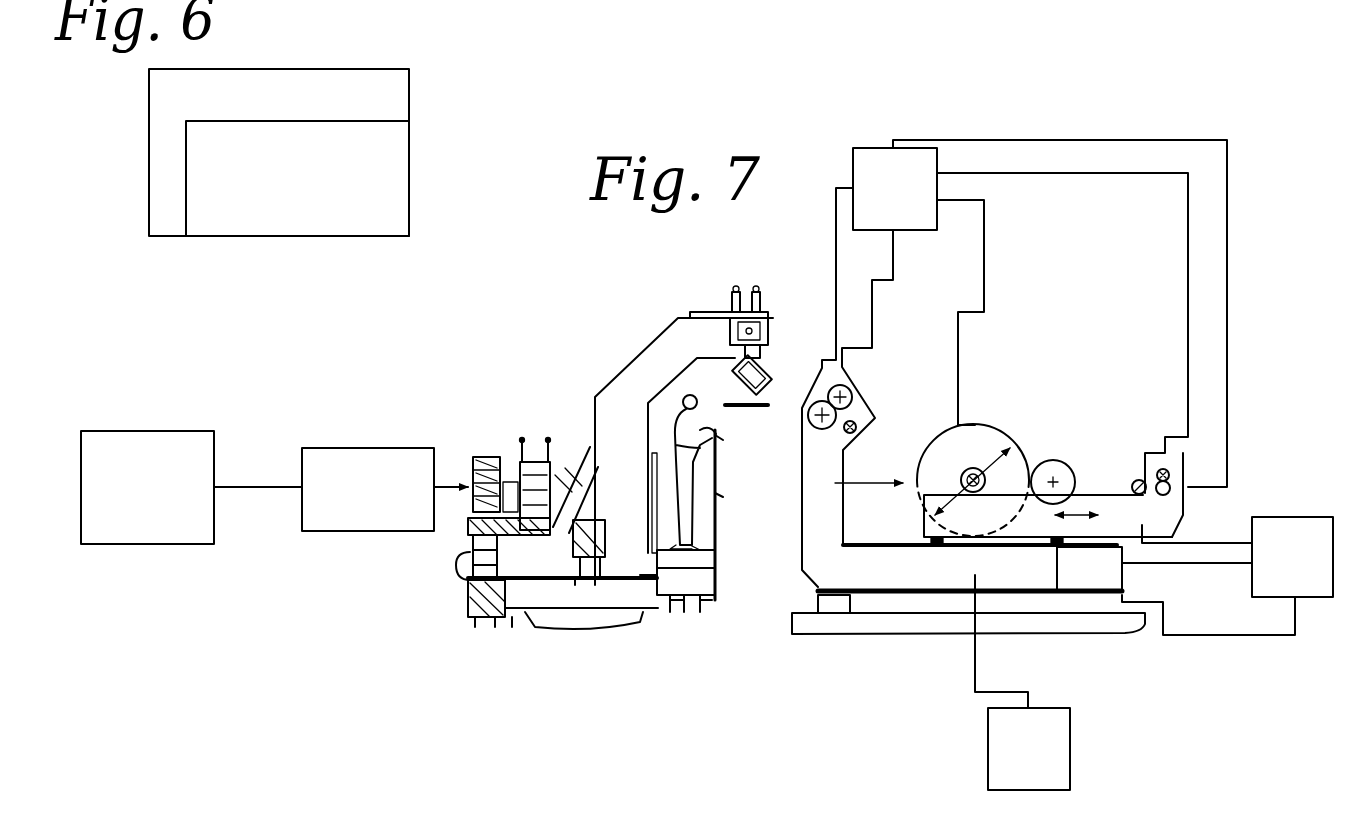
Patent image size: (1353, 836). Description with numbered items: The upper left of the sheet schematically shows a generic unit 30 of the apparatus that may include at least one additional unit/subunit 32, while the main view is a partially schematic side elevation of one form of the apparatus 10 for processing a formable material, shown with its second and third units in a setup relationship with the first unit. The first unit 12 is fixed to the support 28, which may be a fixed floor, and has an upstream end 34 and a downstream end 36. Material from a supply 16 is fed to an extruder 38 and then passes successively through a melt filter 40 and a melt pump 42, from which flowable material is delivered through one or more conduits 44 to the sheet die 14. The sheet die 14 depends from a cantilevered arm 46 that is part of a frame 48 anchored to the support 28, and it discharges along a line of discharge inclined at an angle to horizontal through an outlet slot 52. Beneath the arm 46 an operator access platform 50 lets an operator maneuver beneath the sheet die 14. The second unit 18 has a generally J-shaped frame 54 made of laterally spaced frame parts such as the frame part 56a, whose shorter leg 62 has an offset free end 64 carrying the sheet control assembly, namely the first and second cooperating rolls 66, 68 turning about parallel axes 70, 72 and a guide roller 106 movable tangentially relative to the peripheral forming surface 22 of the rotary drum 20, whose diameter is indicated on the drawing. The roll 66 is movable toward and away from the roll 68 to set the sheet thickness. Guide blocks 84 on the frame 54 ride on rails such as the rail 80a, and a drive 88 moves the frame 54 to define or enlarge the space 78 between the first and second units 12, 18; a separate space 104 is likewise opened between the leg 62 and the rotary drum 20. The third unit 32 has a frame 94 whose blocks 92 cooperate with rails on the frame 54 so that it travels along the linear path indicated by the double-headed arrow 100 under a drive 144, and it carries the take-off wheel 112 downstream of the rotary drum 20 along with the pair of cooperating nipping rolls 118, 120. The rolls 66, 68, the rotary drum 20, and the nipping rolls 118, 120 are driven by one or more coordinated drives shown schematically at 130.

In FIG. 7, the apparatus 10 is at (857, 320).
In FIG. 7, the first unit 12 is at (650, 360).
In FIG. 7, the sheet die 14 is at (770, 365).
In FIG. 7, the supply 16 is at (147, 487).
In FIG. 7, the second unit 18 is at (1095, 572).
In FIG. 7, the rotary drum 20 is at (990, 435).
In FIG. 7, the peripheral forming surface 22 is at (975, 466).
In FIG. 7, the support 28 is at (636, 602).
In FIG. 6, the unit 30 is at (279, 152).
In FIG. 6, the third unit 32 is at (297, 178).
In FIG. 7, the third unit 32 is at (1162, 520).
In FIG. 7, the upstream end 34 is at (452, 564).
In FIG. 7, the downstream end 36 is at (733, 590).
In FIG. 7, the extruder 38 is at (341, 489).
In FIG. 7, the melt filter 40 is at (490, 455).
In FIG. 7, the melt pump 42 is at (540, 465).
In FIG. 7, the conduit 44 is at (585, 450).
In FIG. 7, the cantilevered arm 46 is at (757, 297).
In FIG. 7, the frame 48 is at (625, 400).
In FIG. 7, the operator access platform 50 is at (720, 560).
In FIG. 7, the outlet slot 52 is at (762, 415).
In FIG. 7, the frame 54 is at (1070, 578).
In FIG. 7, the frame part 56a is at (878, 562).
In FIG. 7, the shorter leg 62 is at (838, 520).
In FIG. 7, the offset free end 64 is at (948, 430).
In FIG. 7, the first cooperating roll 66 is at (847, 412).
In FIG. 7, the second cooperating roll 68 is at (806, 473).
In FIG. 7, the axis 70 is at (855, 433).
In FIG. 7, the axis 72 is at (804, 535).
In FIG. 7, the space 78 is at (780, 585).
In FIG. 7, the rail 80a is at (823, 430).
In FIG. 7, the guide block 84 is at (880, 592).
In FIG. 7, the drive 88 is at (1022, 682).
In FIG. 7, the block 92 is at (937, 545).
In FIG. 7, the frame 94 is at (1140, 478).
In FIG. 7, the double-headed arrow 100 is at (1102, 508).
In FIG. 7, the space 104 is at (870, 505).
In FIG. 7, the guide roller 106 is at (878, 392).
In FIG. 7, the take-off wheel 112 is at (1070, 462).
In FIG. 7, the nipping roll 118 is at (1170, 475).
In FIG. 7, the nipping roll 120 is at (1172, 488).
In FIG. 7, the drive 130 is at (895, 189).
In FIG. 7, the drive 144 is at (1237, 557).